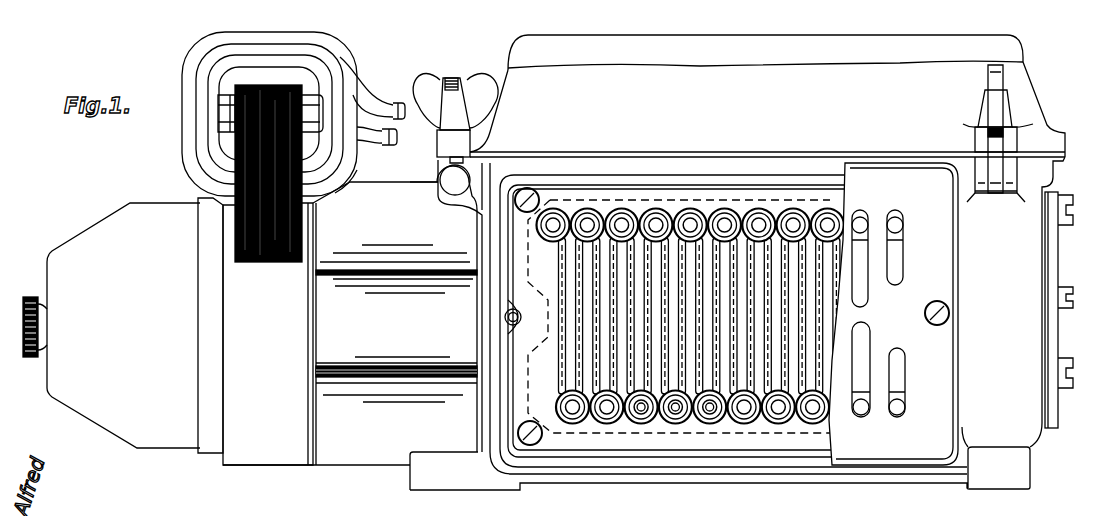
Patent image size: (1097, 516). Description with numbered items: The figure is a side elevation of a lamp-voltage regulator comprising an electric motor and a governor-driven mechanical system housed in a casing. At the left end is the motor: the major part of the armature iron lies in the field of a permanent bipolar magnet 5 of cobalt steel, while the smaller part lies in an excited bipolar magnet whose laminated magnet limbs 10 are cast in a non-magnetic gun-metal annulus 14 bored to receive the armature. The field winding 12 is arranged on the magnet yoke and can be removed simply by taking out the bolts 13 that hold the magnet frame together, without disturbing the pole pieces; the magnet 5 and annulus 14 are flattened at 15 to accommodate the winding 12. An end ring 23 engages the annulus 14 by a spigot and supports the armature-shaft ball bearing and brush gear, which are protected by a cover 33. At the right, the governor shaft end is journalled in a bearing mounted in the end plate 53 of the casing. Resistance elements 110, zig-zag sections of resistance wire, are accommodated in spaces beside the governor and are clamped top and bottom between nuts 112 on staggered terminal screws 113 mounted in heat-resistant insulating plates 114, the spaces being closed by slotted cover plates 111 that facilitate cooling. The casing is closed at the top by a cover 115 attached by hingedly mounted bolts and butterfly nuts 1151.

The field winding 12 is at (200, 55).
The magnet limbs 10 is at (252, 85).
The bolts 13 is at (318, 97).
The flattened portion 15 is at (342, 185).
The cover 33 is at (111, 325).
The end ring 23 is at (210, 325).
The annulus 14 is at (272, 398).
The permanent bipolar magnet 5 is at (350, 315).
The resistance elements 110 is at (562, 357).
The nuts 112 is at (644, 212).
The terminal screws 113 is at (643, 410).
The insulating plates 114 is at (790, 433).
The cover plates 111 is at (900, 450).
The end plate 53 is at (1048, 262).
The cover 115 is at (767, 96).
The butterfly nuts 1151 is at (452, 78).